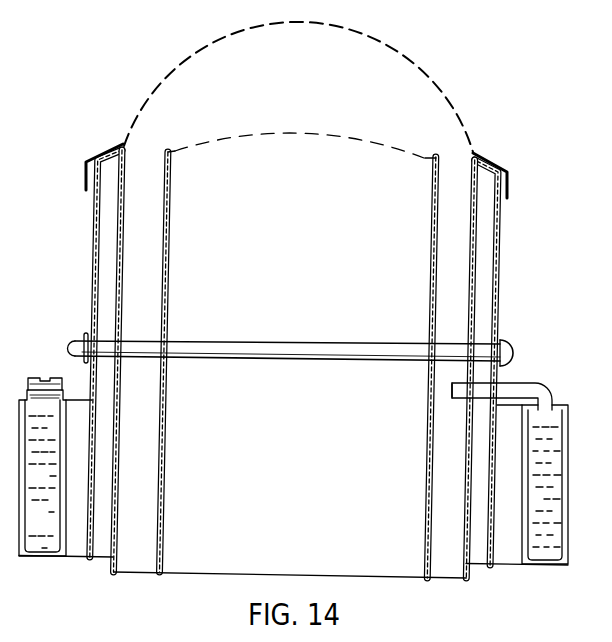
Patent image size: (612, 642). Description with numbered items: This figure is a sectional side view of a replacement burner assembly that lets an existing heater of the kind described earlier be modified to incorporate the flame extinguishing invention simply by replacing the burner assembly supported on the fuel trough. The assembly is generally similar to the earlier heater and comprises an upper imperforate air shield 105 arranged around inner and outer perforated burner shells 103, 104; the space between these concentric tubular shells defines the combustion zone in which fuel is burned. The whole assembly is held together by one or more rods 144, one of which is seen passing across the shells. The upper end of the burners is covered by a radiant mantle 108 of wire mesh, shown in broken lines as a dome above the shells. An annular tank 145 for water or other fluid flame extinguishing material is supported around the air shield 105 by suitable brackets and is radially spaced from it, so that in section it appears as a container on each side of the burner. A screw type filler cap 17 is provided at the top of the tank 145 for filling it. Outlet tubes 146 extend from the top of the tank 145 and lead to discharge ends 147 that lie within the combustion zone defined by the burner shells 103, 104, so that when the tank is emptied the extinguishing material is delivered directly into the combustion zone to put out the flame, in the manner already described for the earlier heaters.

The screw type filler cap 17 is at (48, 377).
The inner burner shell 103 is at (170, 218).
The outer burner shell 104 is at (119, 216).
The upper air shield 105 is at (92, 257).
The radiant mantle 108 is at (192, 54).
The rod 144 is at (80, 343).
The annular tank 145 is at (33, 535).
The outlet tube 146 is at (517, 387).
The discharge end 147 is at (451, 389).